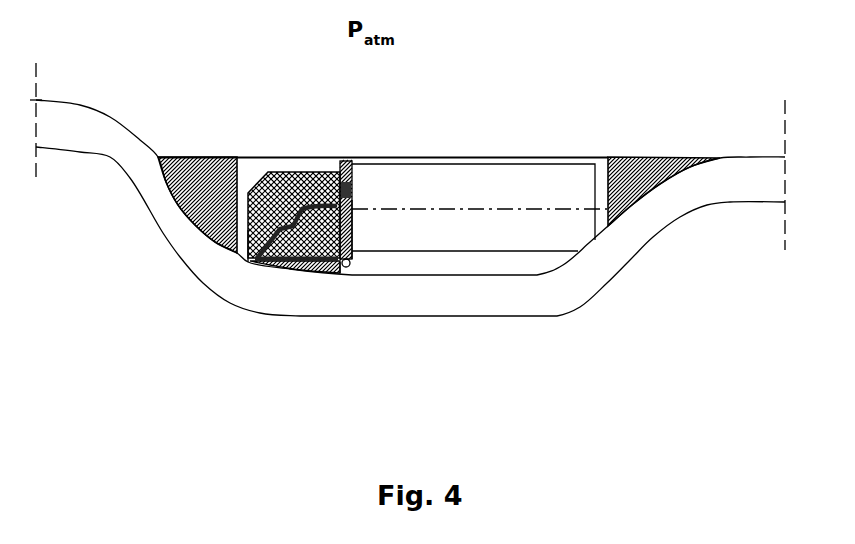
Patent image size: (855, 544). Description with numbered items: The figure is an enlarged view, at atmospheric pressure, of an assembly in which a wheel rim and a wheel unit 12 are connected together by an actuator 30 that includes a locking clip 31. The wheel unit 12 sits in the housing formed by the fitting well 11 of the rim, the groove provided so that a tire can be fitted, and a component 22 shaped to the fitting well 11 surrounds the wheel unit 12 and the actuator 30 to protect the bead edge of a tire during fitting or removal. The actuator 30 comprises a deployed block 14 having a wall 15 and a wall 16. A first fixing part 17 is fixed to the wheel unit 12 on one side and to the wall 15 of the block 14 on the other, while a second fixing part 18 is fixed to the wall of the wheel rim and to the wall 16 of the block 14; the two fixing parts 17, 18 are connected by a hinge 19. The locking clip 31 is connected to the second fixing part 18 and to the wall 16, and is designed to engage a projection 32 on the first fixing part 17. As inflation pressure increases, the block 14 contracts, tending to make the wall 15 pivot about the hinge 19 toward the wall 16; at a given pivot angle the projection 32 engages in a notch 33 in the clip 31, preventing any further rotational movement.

The fitting well 11 is at (505, 297).
The wheel unit 12 is at (533, 180).
The block 14 is at (313, 183).
The wall of the block 15 is at (352, 227).
The wall of the block 16 is at (249, 263).
The first fixing part 17 is at (345, 160).
The second fixing part 18 is at (309, 270).
The hinge 19 is at (350, 270).
The component 22 is at (213, 168).
The actuator 30 is at (263, 185).
The locking clip 31 is at (288, 272).
The projection 32 is at (352, 195).
The notch 33 is at (283, 207).